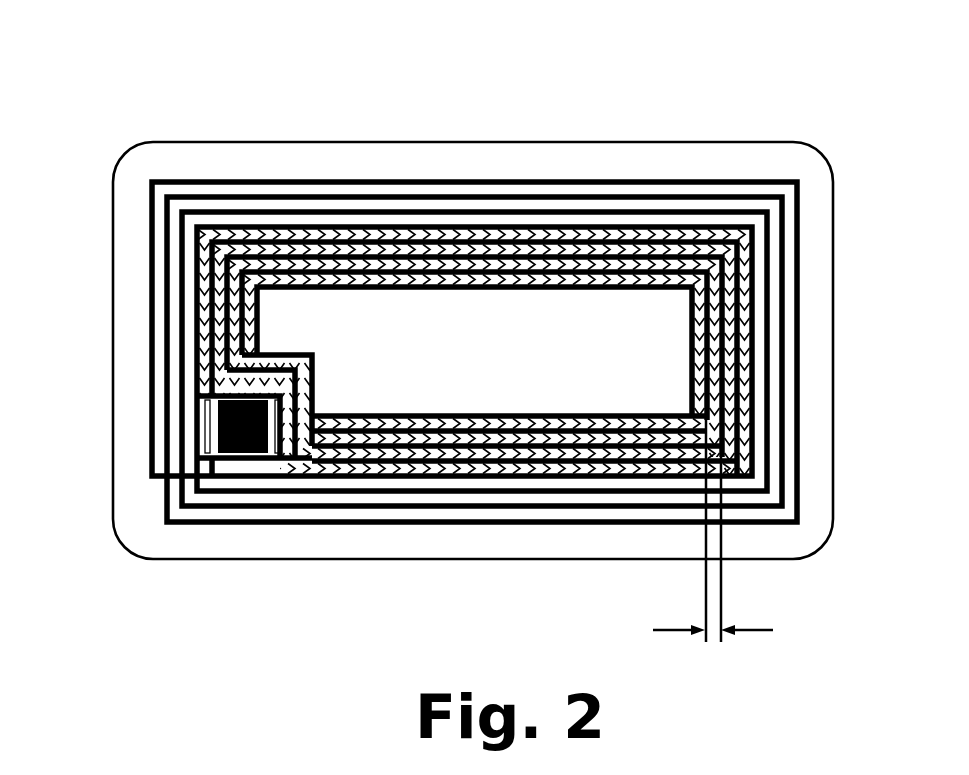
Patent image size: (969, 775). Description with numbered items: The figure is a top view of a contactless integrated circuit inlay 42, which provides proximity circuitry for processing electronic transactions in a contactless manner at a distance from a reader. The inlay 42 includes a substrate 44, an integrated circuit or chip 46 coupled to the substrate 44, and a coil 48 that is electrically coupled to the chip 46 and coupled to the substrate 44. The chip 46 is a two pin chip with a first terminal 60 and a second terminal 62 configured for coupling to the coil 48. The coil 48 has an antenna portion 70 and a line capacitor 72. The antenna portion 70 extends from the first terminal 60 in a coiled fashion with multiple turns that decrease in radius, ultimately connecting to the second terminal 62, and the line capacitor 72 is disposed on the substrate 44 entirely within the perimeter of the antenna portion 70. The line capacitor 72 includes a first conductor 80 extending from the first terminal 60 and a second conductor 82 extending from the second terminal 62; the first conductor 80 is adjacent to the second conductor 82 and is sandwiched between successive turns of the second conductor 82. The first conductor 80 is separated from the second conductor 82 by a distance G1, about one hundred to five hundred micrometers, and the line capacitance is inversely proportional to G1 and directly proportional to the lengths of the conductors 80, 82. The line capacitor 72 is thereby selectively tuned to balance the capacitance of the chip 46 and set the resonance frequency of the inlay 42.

The inlay 42 is at (409, 78).
The substrate 44 is at (740, 160).
The integrated circuit (chip) 46 is at (252, 458).
The coil 48 is at (674, 352).
The first terminal 60 is at (197, 396).
The second terminal 62 is at (282, 397).
The antenna portion 70 is at (227, 178).
The line capacitor 72 is at (474, 304).
The first conductor 80 is at (195, 320).
The second conductor 82 is at (225, 322).
The distance G1 is at (757, 632).